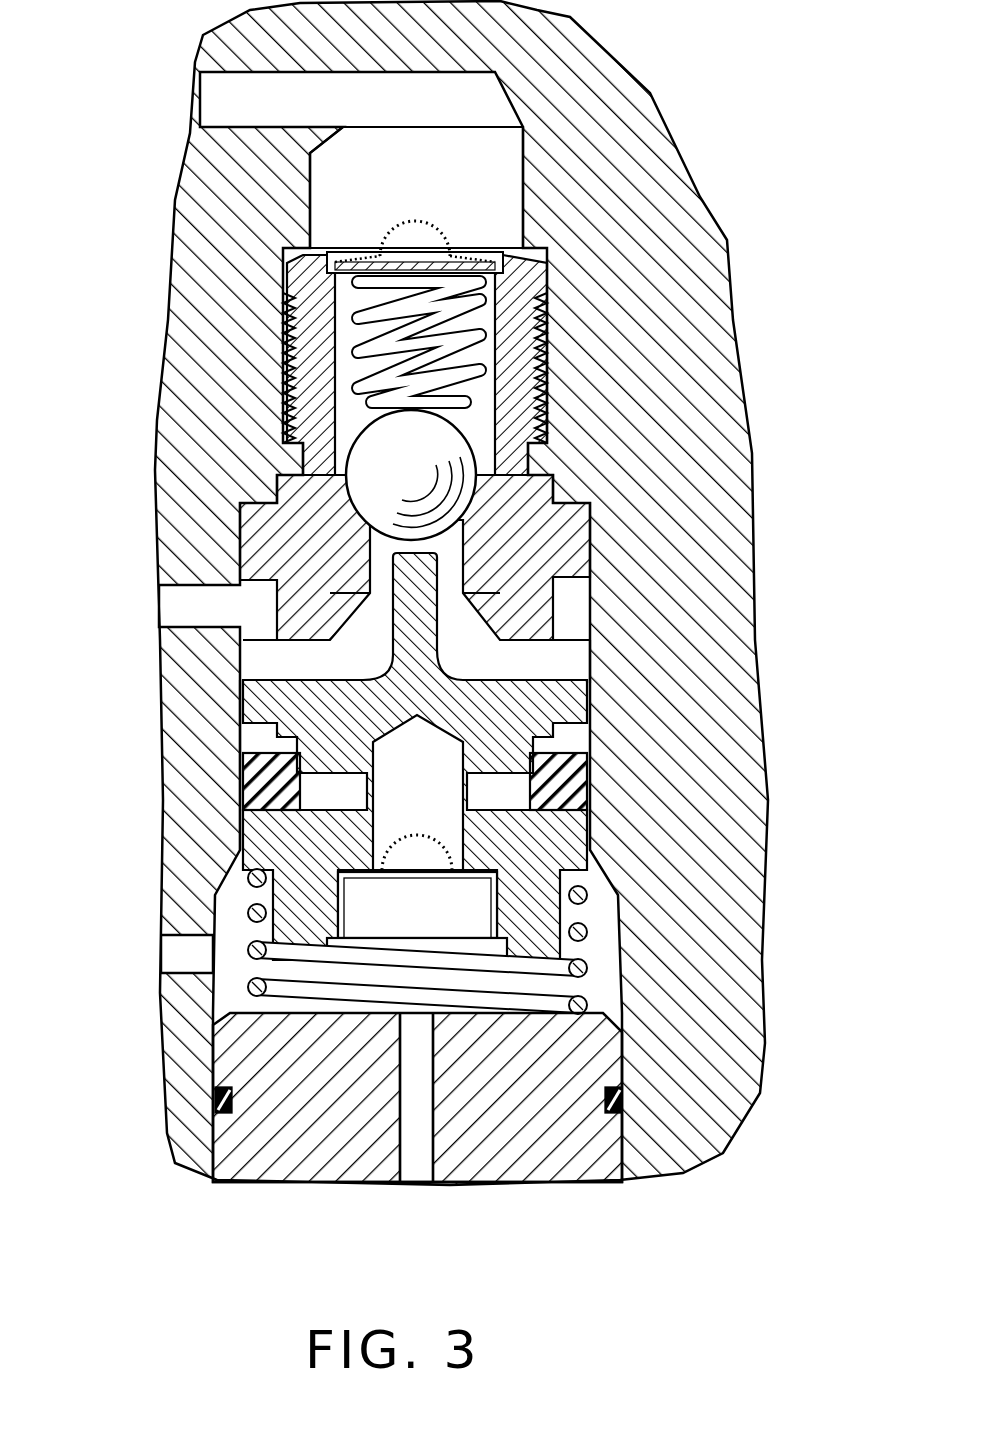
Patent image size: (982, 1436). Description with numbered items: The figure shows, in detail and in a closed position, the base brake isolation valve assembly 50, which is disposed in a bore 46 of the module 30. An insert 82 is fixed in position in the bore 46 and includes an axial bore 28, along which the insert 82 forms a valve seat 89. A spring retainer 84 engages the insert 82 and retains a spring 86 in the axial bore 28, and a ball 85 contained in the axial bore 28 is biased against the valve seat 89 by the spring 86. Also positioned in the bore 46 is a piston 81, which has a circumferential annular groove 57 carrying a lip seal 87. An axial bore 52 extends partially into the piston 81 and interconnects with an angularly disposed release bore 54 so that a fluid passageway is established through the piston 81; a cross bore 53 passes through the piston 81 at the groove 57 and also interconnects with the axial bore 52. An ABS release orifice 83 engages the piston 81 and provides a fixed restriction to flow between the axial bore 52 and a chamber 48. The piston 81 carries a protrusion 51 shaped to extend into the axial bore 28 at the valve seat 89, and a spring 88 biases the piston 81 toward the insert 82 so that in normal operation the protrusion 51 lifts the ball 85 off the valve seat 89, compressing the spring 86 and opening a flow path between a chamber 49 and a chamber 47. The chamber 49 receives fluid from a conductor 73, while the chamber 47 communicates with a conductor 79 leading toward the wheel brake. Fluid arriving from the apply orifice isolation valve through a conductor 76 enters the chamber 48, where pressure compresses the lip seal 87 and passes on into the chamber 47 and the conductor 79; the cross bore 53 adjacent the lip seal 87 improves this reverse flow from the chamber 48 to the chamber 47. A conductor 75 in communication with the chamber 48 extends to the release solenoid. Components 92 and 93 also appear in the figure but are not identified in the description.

The module 30 is at (745, 478).
The conductor 73 is at (200, 80).
The chamber 49 is at (500, 158).
The seal ring 92 is at (393, 235).
The spring retainer 84 is at (440, 257).
The insert 82 is at (503, 282).
The spring 86 is at (370, 367).
The ball 85 is at (373, 440).
The valve seat 89 is at (360, 492).
The axial bore 28 is at (370, 545).
The base brake isolation valve assembly 50 is at (222, 573).
The conductor 79 is at (182, 628).
The chamber 47 is at (580, 602).
The bore 46 is at (590, 660).
The release bore 54 is at (357, 680).
The protrusion 51 is at (440, 605).
The piston 81 is at (240, 705).
The lip seal 87 is at (265, 757).
The circumferential annular groove 57 is at (595, 737).
The cross bore 53 is at (300, 786).
The axial bore 52 is at (463, 827).
The seal lip 93 is at (397, 840).
The ABS release orifice 83 is at (438, 883).
The spring 88 is at (248, 910).
The conductor 76 is at (175, 942).
The chamber 48 is at (610, 948).
The conductor 75 is at (420, 1185).